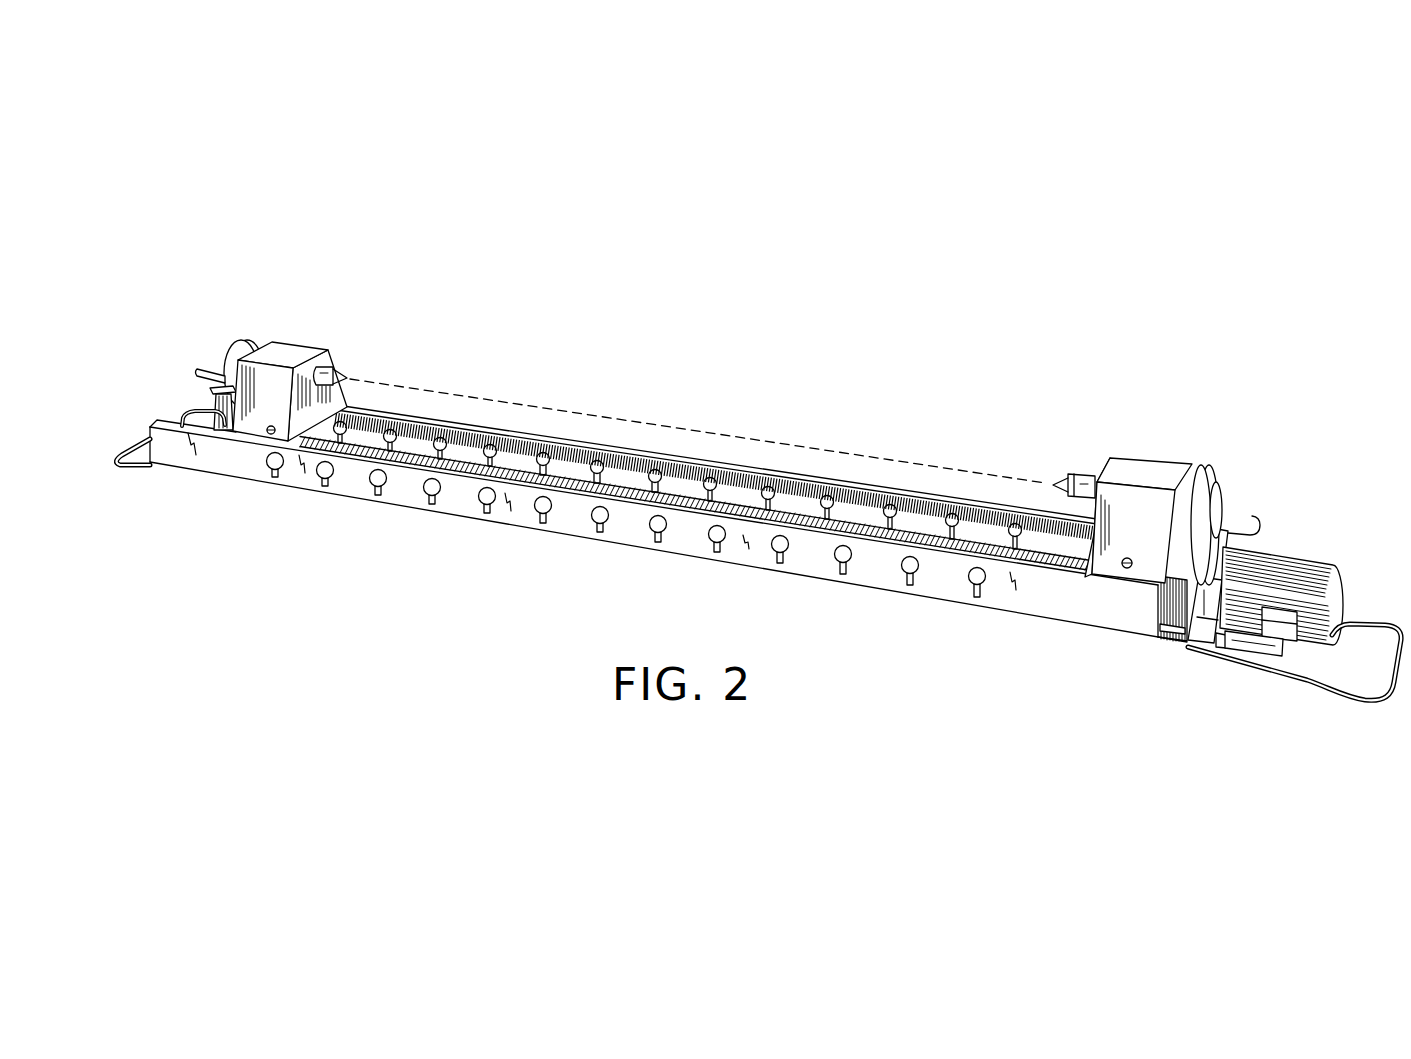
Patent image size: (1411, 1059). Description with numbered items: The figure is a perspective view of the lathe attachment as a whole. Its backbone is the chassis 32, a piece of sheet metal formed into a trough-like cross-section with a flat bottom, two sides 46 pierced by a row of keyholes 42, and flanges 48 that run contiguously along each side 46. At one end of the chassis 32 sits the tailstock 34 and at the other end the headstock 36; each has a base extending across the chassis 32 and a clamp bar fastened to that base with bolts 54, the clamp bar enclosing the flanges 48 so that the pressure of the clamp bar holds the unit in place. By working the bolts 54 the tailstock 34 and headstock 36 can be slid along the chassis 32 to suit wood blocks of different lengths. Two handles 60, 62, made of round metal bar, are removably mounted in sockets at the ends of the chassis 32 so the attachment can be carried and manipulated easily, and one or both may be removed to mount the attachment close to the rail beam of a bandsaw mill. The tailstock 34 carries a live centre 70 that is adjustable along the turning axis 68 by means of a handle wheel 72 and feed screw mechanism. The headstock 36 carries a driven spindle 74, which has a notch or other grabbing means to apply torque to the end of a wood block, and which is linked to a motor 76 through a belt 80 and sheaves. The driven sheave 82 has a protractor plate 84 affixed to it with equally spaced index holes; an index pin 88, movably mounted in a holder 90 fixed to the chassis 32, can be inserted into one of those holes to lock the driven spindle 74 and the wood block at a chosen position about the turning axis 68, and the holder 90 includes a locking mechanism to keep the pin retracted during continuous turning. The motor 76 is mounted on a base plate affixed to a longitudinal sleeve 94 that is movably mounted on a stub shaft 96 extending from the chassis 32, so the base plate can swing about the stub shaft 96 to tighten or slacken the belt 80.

The chassis 32 is at (940, 597).
The tailstock 34 is at (292, 345).
The headstock 36 is at (1147, 462).
The keyholes 42 is at (620, 465).
The sides 46 is at (225, 455).
The flanges 48 is at (441, 432).
The bolts 54 is at (270, 434).
The handle 60 is at (127, 447).
The handle 62 is at (1378, 627).
The turning axis 68 is at (800, 445).
The live centre 70 is at (340, 365).
The handle wheel 72 is at (230, 345).
The driven spindle 74 is at (1080, 470).
The motor 76 is at (1310, 565).
The belt 80 is at (1210, 469).
The driven sheave 82 is at (1200, 463).
The protractor plate 84 is at (1217, 487).
The index pin 88 is at (1248, 528).
The holder 90 is at (1200, 646).
The longitudinal sleeve 94 is at (1245, 656).
The stub shaft 96 is at (1170, 632).